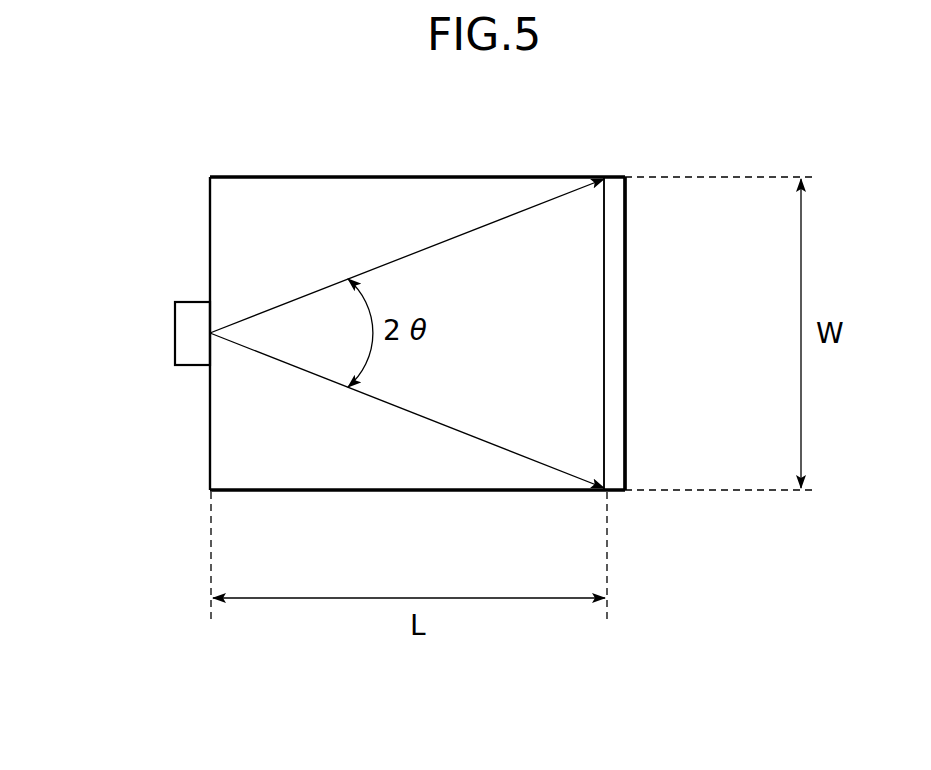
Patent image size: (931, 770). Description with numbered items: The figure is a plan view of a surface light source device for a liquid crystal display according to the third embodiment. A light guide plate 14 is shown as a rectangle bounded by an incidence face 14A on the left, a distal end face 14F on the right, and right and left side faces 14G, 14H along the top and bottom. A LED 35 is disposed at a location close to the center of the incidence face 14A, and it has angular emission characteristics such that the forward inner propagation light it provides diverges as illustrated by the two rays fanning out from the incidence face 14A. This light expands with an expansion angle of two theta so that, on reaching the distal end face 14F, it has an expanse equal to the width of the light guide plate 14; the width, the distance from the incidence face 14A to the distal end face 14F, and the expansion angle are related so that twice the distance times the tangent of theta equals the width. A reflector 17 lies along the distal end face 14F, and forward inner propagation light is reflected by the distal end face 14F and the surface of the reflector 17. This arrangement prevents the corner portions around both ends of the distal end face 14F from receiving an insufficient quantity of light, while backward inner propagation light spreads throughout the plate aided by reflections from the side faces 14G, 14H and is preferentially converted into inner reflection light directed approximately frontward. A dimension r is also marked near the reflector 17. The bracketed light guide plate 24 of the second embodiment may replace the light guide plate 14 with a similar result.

The light guide plate 14 is at (417, 296).
The light guide plate 24 is at (285, 190).
The incidence face 14A is at (210, 200).
The distal end face 14F is at (604, 313).
The side face 14G is at (461, 177).
The side face 14H is at (463, 492).
The reflector 17 is at (614, 259).
The LED 35 is at (188, 328).
The gap / thickness r is at (609, 192).